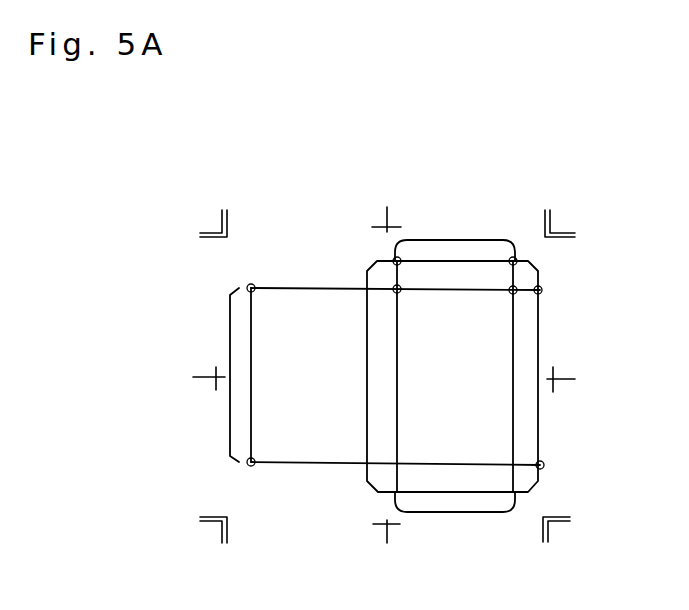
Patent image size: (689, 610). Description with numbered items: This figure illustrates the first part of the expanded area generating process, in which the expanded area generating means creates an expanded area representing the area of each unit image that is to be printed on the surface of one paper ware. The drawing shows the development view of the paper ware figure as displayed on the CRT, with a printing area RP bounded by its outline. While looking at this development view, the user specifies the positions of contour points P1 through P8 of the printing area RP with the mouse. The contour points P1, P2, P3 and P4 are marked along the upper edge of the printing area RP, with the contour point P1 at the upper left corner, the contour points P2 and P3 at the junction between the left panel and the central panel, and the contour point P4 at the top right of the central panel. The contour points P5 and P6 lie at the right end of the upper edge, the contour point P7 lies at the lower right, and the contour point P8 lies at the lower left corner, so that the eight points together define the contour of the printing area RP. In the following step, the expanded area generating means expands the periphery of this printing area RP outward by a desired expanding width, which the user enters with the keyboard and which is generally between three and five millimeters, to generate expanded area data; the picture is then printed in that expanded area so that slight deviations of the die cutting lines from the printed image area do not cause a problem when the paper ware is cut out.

The contour point P1 is at (250, 286).
The contour point P2 is at (396, 287).
The contour point P3 is at (398, 260).
The contour point P4 is at (514, 259).
The contour point P5 is at (516, 289).
The contour point P6 is at (541, 290).
The contour point P7 is at (545, 465).
The contour point P8 is at (249, 464).
The printing area RP is at (325, 440).